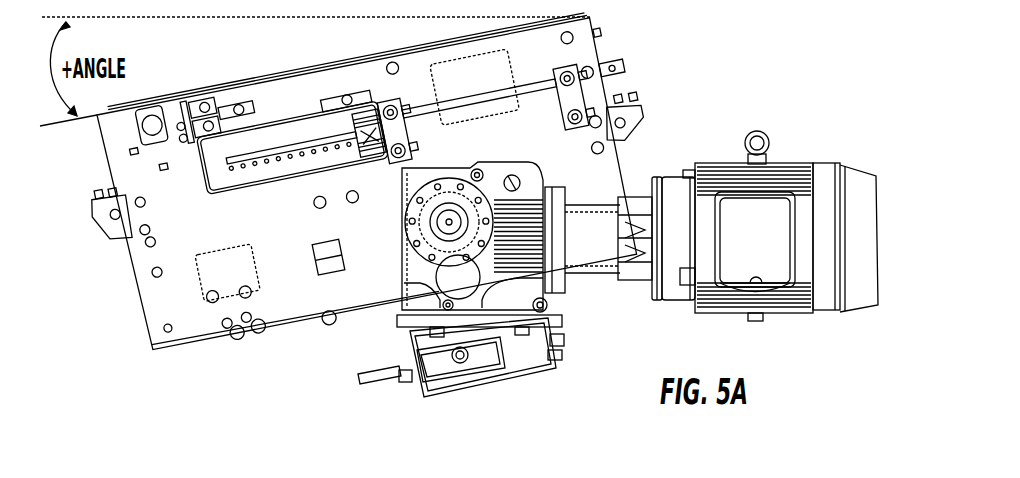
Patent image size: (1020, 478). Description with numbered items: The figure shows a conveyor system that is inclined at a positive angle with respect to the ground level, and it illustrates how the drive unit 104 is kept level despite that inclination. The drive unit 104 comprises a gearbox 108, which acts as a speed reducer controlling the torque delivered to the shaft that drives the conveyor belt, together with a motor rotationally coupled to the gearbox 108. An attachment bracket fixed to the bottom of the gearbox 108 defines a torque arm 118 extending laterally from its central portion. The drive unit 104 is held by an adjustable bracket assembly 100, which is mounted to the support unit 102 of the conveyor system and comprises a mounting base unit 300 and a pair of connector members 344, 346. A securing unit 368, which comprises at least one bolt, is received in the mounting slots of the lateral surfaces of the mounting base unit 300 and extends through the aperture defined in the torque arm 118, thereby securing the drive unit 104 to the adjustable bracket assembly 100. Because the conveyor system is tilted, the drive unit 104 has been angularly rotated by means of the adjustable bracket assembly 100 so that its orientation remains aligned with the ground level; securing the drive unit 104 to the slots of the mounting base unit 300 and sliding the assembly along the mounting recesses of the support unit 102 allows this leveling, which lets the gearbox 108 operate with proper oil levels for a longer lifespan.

The adjustable bracket assembly 100 is at (428, 401).
The support unit 102 is at (392, 339).
The drive unit 104 is at (797, 102).
The gearbox 108 is at (522, 192).
The torque arm 118 is at (472, 337).
The mounting base unit 300 is at (515, 391).
The connector member 344 is at (373, 378).
The connector member 346 is at (557, 352).
The securing unit 368 is at (462, 363).